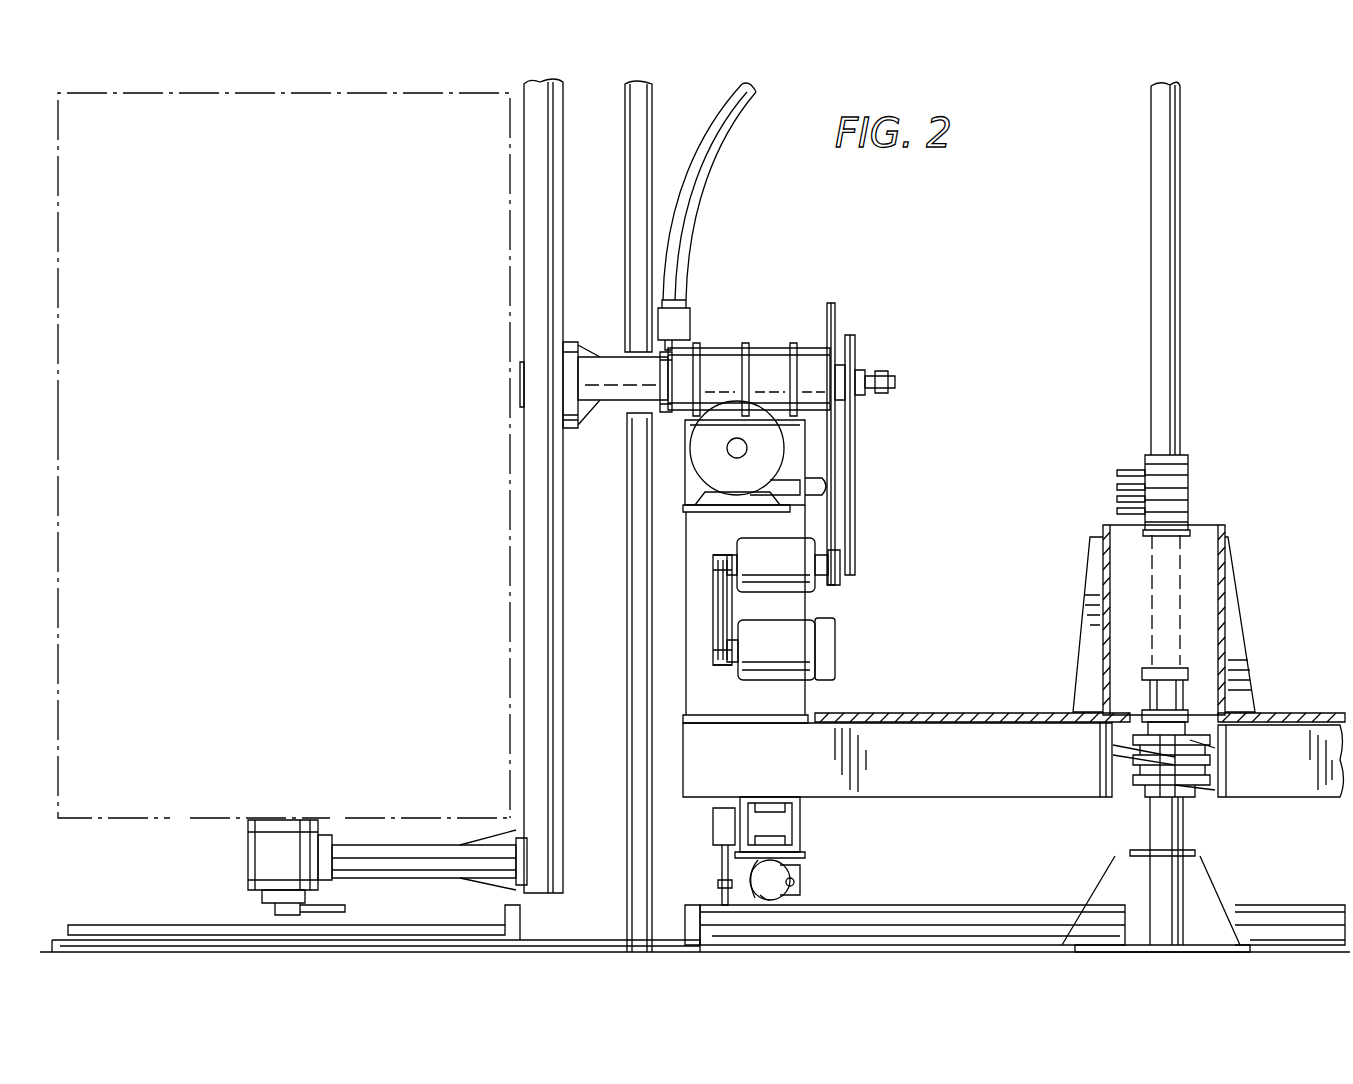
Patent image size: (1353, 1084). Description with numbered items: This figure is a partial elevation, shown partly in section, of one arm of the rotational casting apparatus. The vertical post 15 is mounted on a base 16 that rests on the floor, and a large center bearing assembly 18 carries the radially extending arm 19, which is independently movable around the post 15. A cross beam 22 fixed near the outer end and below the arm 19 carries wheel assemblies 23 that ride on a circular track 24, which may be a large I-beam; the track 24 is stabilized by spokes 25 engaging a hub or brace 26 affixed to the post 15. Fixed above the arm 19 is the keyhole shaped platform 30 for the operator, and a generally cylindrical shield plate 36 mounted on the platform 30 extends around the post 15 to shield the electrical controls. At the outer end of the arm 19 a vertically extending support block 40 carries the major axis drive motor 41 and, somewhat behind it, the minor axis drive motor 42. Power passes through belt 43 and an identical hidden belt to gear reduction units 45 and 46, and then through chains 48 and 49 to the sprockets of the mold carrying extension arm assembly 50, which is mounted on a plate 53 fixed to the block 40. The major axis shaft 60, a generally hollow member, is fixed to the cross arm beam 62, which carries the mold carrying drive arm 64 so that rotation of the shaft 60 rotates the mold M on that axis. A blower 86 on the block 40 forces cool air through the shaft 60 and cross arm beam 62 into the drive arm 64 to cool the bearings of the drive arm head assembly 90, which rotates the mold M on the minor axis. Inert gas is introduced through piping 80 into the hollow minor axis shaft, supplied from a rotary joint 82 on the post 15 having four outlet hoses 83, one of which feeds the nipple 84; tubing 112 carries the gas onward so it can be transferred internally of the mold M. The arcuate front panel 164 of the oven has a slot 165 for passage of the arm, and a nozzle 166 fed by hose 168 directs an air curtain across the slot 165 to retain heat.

The post 15 is at (1182, 290).
The base 16 is at (1210, 935).
The center bearing assembly 18 is at (1195, 790).
The arm 19 is at (985, 790).
The cross beam 22 is at (802, 826).
The wheel assemblies 23 is at (800, 878).
The circular track 24 is at (715, 905).
The spokes 25 is at (890, 915).
The hub or brace 26 is at (1128, 872).
The keyhole shaped platform 30 is at (915, 710).
The cylindrical shield plate 36 is at (1230, 600).
The support block 40 is at (690, 535).
The major axis drive motor 41 is at (800, 640).
The minor axis drive motor 42 is at (835, 648).
The belt 43 is at (712, 604).
The gear reduction unit 45 is at (748, 548).
The gear reduction unit 46 is at (840, 580).
The chain 48 is at (838, 310).
The chain 49 is at (857, 482).
The mold carrying extension arm assembly 50 is at (772, 337).
The plate 53 is at (680, 412).
The major axis shaft 60 is at (622, 368).
The cross arm beam 62 is at (540, 205).
The mold carrying drive arm 64 is at (395, 842).
The piping 80 is at (897, 382).
The rotary joint 82 is at (1190, 475).
The outlet hoses 83 is at (1130, 470).
The nipple 84 is at (866, 372).
The blower 86 is at (750, 448).
The drive arm head assembly 90 is at (272, 855).
The tubing 112 is at (340, 912).
The arcuate front panel 164 is at (632, 487).
The slot 165 is at (620, 405).
The nozzle 166 is at (692, 318).
The hose 168 is at (690, 212).
The mold M is at (160, 822).